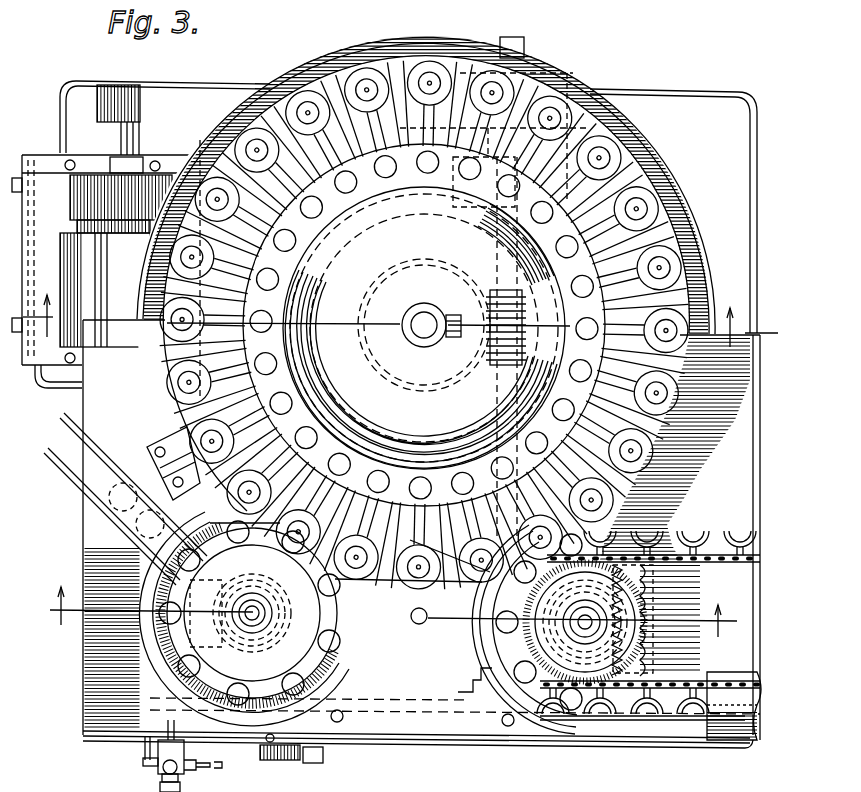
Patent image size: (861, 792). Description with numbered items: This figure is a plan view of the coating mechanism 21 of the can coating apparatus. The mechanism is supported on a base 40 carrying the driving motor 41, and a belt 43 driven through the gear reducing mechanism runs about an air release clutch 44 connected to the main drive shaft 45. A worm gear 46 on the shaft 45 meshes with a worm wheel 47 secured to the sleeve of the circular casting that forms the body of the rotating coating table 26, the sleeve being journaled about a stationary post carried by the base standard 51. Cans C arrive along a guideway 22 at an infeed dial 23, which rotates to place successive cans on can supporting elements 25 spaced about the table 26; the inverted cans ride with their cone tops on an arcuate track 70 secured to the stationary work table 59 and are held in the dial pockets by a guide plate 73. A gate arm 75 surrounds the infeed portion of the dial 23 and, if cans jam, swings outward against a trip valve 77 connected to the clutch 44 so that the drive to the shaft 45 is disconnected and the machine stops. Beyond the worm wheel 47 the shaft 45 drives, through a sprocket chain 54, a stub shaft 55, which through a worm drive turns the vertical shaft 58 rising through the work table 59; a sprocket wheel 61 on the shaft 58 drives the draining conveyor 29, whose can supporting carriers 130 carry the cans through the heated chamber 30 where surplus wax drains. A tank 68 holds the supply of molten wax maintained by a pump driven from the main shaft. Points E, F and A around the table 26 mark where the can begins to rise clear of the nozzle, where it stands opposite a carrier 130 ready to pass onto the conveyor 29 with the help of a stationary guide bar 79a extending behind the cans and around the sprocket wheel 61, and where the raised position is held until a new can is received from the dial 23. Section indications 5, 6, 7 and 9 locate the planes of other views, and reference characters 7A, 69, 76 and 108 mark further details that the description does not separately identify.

The belt 43 is at (196, 98).
The air release clutch 44 is at (548, 80).
The rotating coating table 26 is at (578, 122).
The base 40 is at (684, 110).
The driving motor 41 is at (106, 242).
The section line 5- 5 is at (200, 316).
The section line 6- 6 is at (615, 327).
The side plate 7 is at (680, 407).
The section line 9- 9 is at (391, 612).
The can supporting element 25 is at (418, 582).
The point A is at (340, 463).
The worm gear 46 is at (488, 344).
The worm wheel 47 is at (494, 290).
The main drive shaft 45 is at (492, 372).
The pin 7A is at (556, 329).
The point E is at (563, 363).
The point F is at (503, 470).
The coating mechanism 21 is at (92, 576).
The stationary work table 59 is at (93, 714).
The can C is at (118, 507).
The guideway 22 is at (140, 508).
The gate arm 75 is at (153, 651).
The tank 68 is at (193, 623).
The gear disc 108 is at (300, 575).
The gear hub 69 is at (251, 620).
The infeed dial 23 is at (340, 625).
The arcuate track 70 is at (323, 642).
The trip valve 77 is at (163, 748).
The screw 76 is at (267, 741).
The guide plate 73 is at (412, 704).
The draining conveyor 29 is at (570, 698).
The base standard 51 is at (618, 616).
The vertical shaft 58 is at (618, 637).
The stub shaft 55 is at (640, 663).
The sprocket wheel 61 is at (618, 570).
The sprocket chain 54 is at (462, 683).
The chain rail 79a is at (623, 471).
The can supporting carrier 130 is at (613, 504).
The heated chamber 30 is at (733, 721).